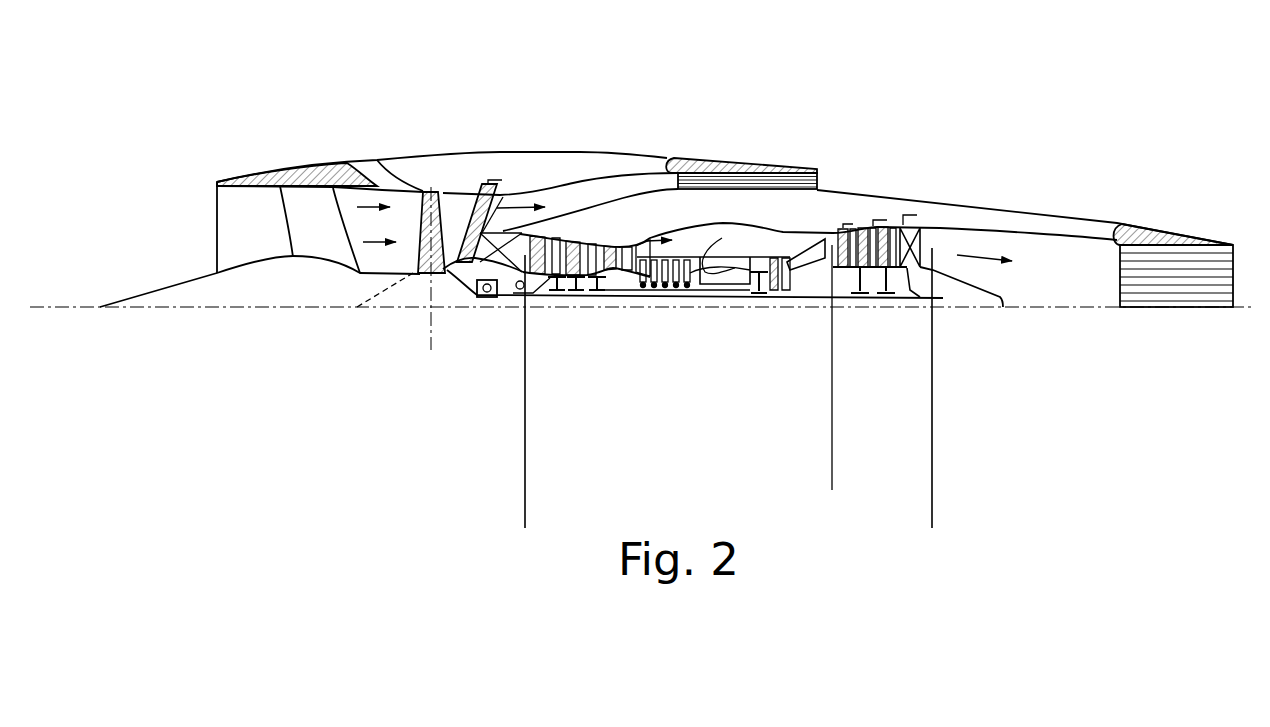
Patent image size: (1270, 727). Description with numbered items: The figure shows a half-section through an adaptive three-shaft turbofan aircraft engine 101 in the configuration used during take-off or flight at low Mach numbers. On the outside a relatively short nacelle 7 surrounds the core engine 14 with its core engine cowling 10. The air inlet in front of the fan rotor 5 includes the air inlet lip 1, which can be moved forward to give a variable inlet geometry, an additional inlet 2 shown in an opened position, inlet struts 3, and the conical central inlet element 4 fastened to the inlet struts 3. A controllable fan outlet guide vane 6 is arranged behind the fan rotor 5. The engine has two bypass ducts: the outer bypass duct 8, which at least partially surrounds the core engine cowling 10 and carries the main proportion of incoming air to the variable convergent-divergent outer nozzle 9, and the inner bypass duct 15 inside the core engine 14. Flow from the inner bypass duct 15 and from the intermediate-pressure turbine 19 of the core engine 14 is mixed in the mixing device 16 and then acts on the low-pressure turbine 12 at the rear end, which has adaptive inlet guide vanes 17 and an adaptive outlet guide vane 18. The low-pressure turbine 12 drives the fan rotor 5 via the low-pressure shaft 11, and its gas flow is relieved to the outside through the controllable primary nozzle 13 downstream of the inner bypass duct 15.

The aircraft engine 101 is at (912, 83).
The air inlet lip 1 is at (251, 179).
The additional inlet 2 is at (370, 173).
The inlet struts 3 is at (327, 248).
The conical central inlet element 4 is at (147, 300).
The fan rotor 5 is at (420, 273).
The fan outlet guide vane 6 is at (476, 204).
The nacelle 7 is at (502, 151).
The outer bypass duct 8 is at (568, 203).
The outer nozzle 9 is at (750, 158).
The core engine cowling 10 is at (939, 199).
The low-pressure shaft 11 is at (507, 300).
The low-pressure turbine 12 is at (835, 472).
The primary nozzle 13 is at (1178, 227).
The core engine 14 is at (922, 515).
The inner bypass duct 15 is at (718, 238).
The mixing device 16 is at (822, 252).
The inlet guide vanes 17 is at (838, 272).
The outlet guide vane 18 is at (898, 270).
The intermediate-pressure turbine 19 is at (768, 270).